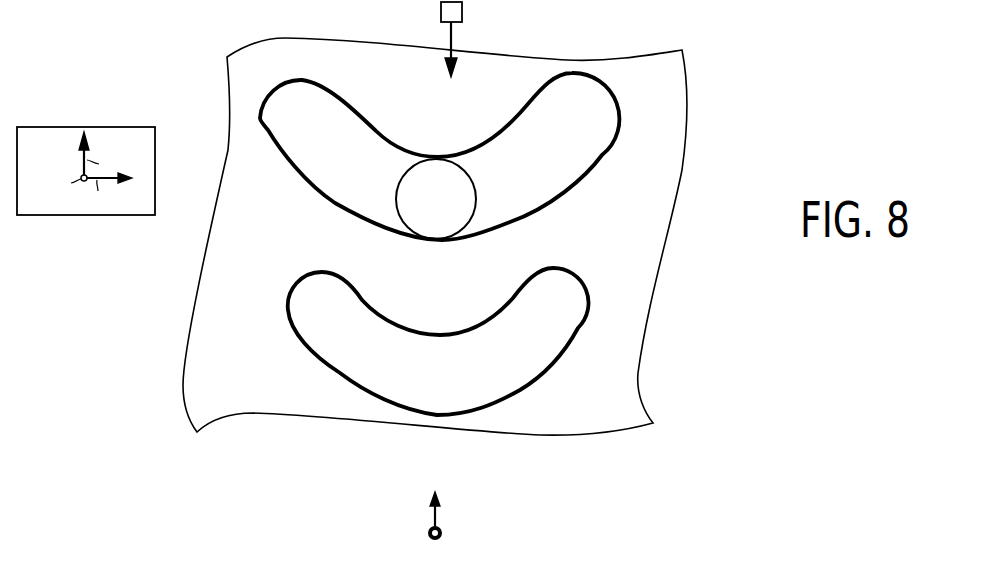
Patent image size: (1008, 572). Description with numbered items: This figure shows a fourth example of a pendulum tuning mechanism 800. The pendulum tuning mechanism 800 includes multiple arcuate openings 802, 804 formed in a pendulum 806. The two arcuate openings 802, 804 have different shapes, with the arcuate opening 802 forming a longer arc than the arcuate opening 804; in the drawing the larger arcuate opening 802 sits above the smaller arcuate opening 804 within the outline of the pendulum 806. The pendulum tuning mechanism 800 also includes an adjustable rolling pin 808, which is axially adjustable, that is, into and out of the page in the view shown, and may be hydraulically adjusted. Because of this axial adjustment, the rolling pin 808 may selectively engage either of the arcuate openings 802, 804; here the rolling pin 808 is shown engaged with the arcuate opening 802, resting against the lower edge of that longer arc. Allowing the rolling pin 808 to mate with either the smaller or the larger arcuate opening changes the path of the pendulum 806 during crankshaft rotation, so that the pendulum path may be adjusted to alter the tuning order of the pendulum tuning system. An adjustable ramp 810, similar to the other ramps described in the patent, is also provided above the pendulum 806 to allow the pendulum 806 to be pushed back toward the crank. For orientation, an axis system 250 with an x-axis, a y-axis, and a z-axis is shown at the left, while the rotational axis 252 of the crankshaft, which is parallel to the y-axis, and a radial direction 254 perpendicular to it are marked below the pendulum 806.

The pendulum tuning mechanism 800 is at (735, 65).
The arcuate opening 802 is at (358, 125).
The arcuate opening 804 is at (367, 307).
The pendulum 806 is at (658, 174).
The adjustable rolling pin 808 is at (397, 193).
The adjustable ramp 810 is at (441, 13).
The axis system 250 is at (83, 127).
The rotational axis 252 is at (428, 533).
The radial direction 254 is at (437, 511).